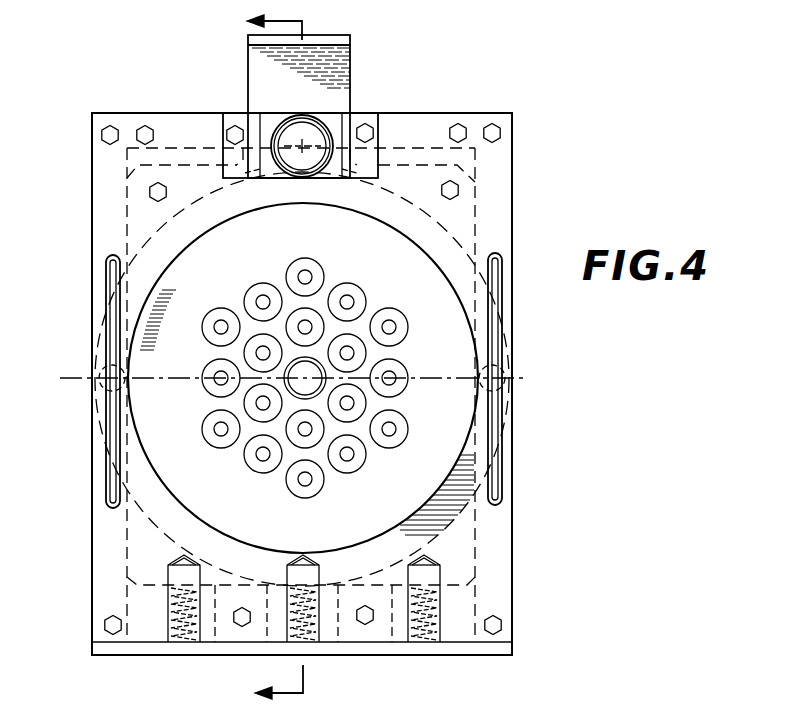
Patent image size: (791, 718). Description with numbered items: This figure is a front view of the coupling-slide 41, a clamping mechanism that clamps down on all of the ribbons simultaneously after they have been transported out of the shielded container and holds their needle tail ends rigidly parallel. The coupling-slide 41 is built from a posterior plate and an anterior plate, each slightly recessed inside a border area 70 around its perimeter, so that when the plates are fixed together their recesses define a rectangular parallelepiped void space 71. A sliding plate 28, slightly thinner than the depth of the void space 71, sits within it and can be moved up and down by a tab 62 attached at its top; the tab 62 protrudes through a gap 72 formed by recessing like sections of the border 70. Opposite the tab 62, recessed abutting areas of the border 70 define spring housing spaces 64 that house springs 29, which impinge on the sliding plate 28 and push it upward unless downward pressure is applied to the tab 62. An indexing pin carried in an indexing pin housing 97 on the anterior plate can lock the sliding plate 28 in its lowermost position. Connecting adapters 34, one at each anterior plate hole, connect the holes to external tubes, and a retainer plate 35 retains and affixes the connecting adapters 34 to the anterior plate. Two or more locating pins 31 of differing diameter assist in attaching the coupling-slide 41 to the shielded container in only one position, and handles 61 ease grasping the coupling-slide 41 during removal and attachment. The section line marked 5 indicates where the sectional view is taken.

The section line 5- 5 is at (289, 359).
The sliding plate 28 is at (187, 170).
The springs 29 is at (427, 652).
The locating pins 31 is at (96, 365).
The connecting adapters 34 is at (390, 322).
The retainer plate 35 is at (303, 378).
The coupling-slide 41 is at (522, 550).
The handles 61 is at (108, 498).
The tab 62 is at (351, 52).
The spring housing spaces 64 is at (192, 632).
The border area 70 is at (497, 200).
The rectangular parallelepiped void space 71 is at (475, 148).
The gap 72 is at (352, 122).
The indexing pin housing 97 is at (272, 126).